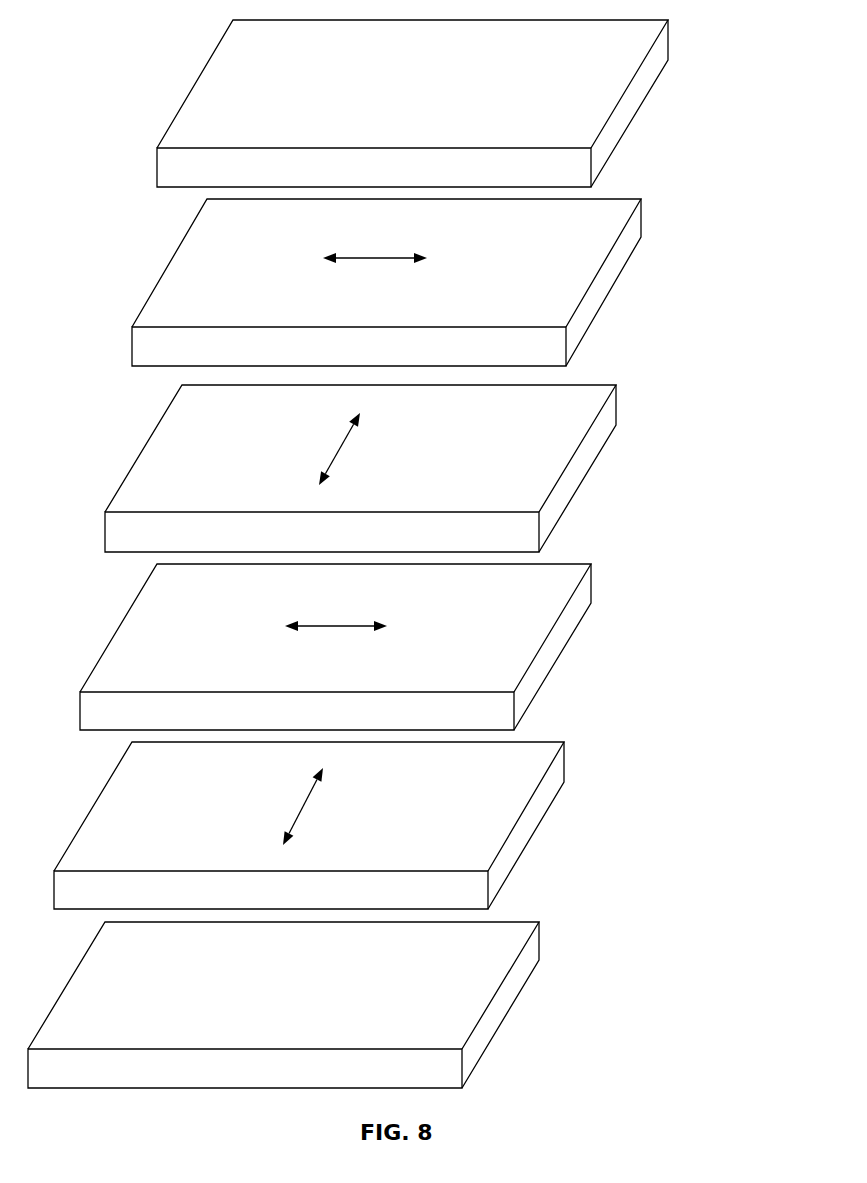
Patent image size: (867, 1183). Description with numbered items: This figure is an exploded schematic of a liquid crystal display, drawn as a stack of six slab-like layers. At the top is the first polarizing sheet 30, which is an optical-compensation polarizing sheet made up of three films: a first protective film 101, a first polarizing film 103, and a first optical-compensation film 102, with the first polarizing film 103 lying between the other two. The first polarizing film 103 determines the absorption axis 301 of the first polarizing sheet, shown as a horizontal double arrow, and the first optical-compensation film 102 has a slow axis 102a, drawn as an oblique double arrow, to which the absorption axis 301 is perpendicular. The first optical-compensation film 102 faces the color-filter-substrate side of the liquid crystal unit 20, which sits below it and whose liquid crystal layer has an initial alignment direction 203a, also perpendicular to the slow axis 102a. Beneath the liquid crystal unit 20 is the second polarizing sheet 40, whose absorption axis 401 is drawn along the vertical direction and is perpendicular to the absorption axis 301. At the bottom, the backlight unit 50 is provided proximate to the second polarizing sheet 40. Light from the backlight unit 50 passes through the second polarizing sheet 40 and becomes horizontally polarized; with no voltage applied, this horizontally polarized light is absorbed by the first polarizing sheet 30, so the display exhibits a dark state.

The first polarizing sheet 30 is at (99, 28).
The first protective film 101 is at (640, 88).
The first polarizing film 103 is at (609, 277).
The absorption axis of first polarizing sheet 301 is at (426, 267).
The first optical-compensation film 102 is at (576, 480).
The slow axis of first optical-compensation film 102a is at (350, 442).
The liquid crystal unit 20 is at (551, 650).
The initial alignment direction of liquid crystal 203a is at (387, 630).
The second polarizing sheet 40 is at (537, 815).
The absorption axis of second polarizing sheet 401 is at (310, 797).
The backlight unit 50 is at (539, 947).